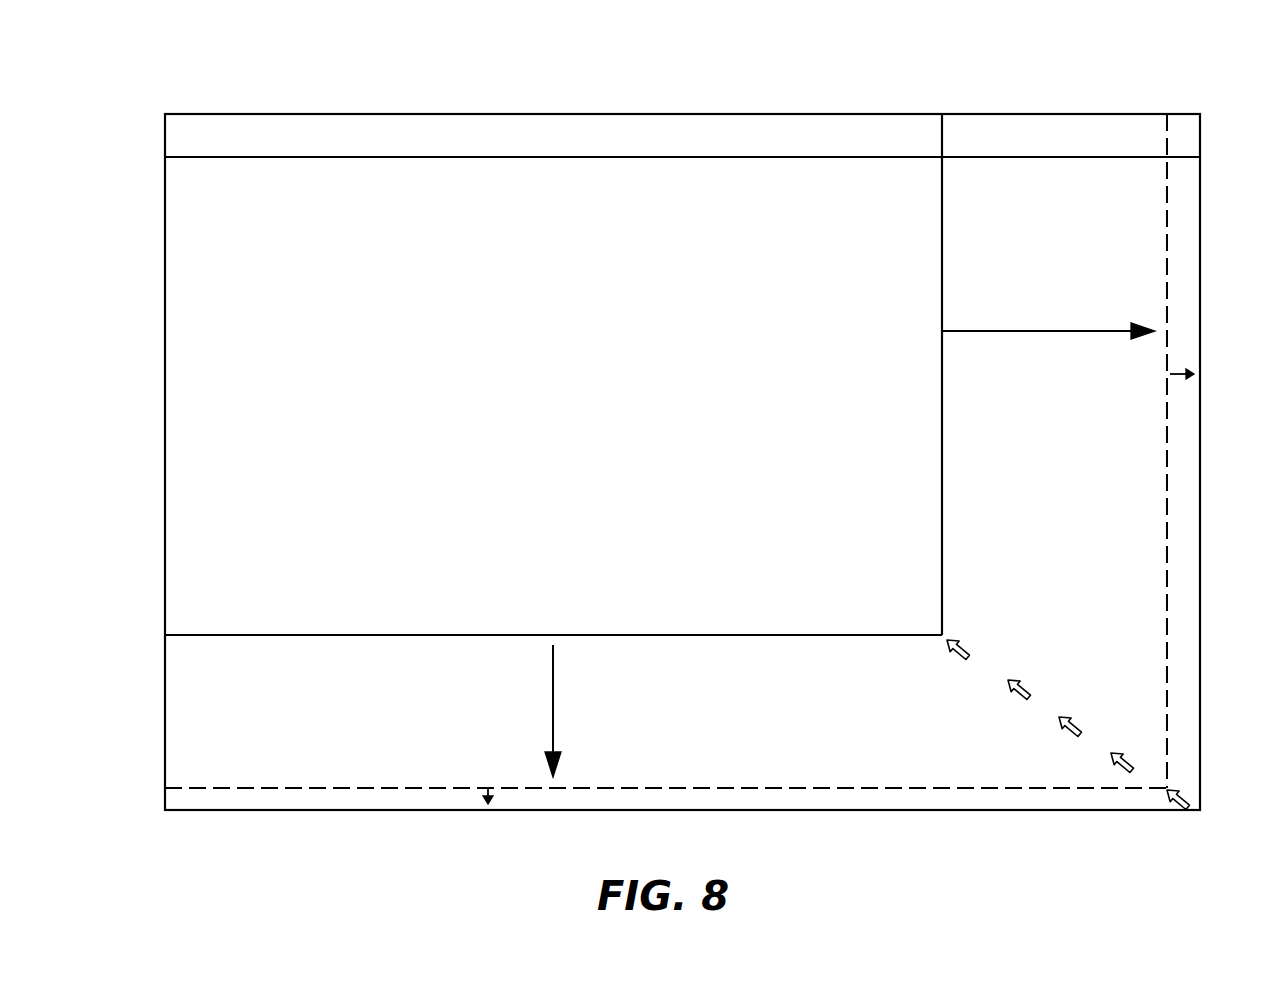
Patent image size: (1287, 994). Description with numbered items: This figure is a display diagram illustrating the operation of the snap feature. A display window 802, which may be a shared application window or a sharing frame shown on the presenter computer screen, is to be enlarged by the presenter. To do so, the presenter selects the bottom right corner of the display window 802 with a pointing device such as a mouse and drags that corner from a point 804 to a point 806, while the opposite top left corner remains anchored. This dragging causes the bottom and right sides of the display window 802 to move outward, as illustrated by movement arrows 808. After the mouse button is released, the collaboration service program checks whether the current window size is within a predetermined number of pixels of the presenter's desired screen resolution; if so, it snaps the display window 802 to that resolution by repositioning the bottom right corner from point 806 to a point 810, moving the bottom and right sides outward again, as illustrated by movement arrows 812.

The display window 802 is at (580, 381).
The point 804 is at (948, 634).
The point 806 is at (1172, 790).
The movement arrows 808 is at (1037, 331).
The point 810 is at (1200, 810).
The movement arrows 812 is at (1178, 372).